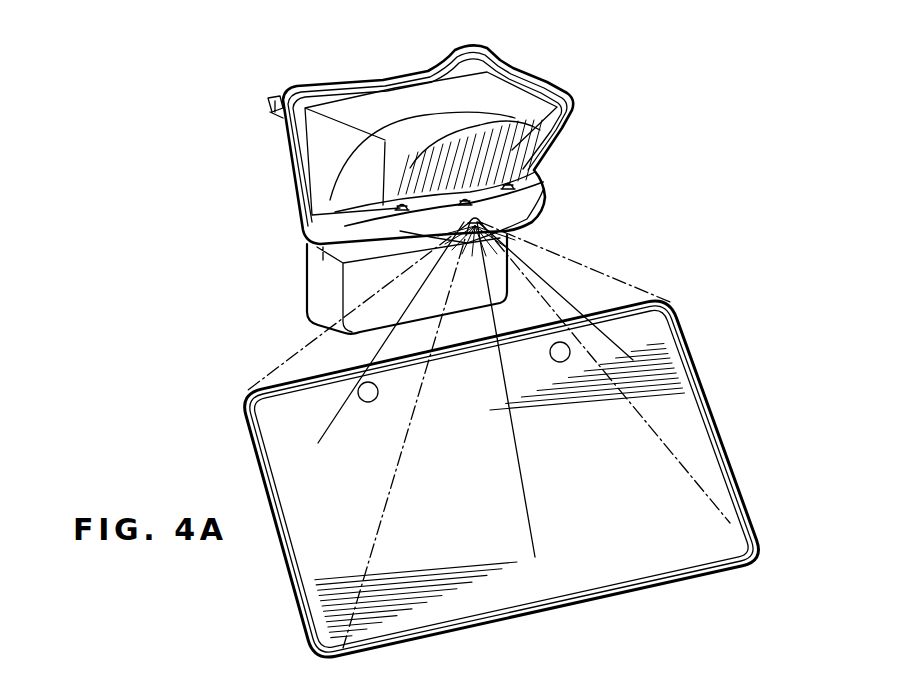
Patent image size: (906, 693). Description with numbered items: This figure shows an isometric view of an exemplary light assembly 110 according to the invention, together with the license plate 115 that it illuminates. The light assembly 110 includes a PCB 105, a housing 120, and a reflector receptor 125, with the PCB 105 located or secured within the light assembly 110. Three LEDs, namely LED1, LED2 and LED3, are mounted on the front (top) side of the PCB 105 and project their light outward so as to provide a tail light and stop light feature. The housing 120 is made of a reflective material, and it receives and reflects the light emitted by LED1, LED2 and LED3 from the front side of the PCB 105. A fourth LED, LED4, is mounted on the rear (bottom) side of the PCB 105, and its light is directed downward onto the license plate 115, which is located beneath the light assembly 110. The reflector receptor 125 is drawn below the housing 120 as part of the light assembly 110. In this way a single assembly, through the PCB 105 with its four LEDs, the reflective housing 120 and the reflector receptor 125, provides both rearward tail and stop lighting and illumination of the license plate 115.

The light assembly 110 is at (283, 67).
The housing 120 is at (533, 78).
The PCB 105 is at (492, 197).
The reflector receptor 125 is at (318, 293).
The license plate 115 is at (652, 550).
The element LED1 is at (508, 185).
The element LED2 is at (465, 202).
The element LED3 is at (402, 206).
The element LED4 is at (470, 218).